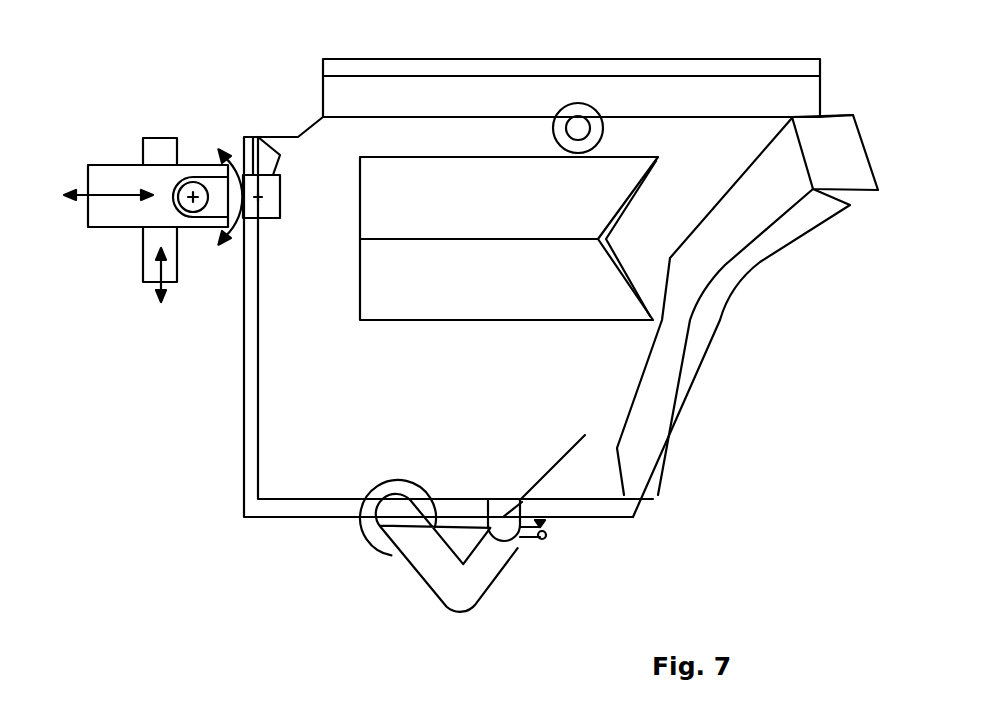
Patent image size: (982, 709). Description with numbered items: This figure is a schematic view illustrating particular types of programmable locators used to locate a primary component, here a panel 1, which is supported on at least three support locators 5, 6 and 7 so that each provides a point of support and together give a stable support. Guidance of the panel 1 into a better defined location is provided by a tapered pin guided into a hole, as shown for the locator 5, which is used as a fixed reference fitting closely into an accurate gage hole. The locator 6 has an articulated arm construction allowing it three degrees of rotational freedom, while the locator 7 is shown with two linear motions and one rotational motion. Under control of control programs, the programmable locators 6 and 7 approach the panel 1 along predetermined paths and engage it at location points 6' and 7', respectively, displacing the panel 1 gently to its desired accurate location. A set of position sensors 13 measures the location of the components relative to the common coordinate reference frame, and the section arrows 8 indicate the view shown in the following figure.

The panel 1 is at (797, 85).
The locator 5 is at (592, 113).
The locator 6 is at (421, 546).
The location point 6' is at (621, 474).
The locator 7 is at (149, 187).
The location point 7' is at (248, 149).
The section line 8 is at (567, 87).
The position sensors 13 is at (548, 527).